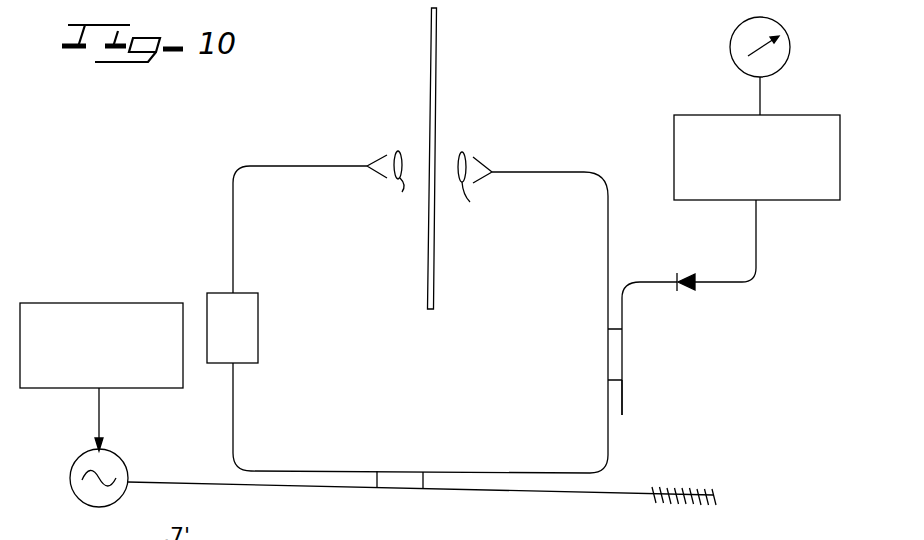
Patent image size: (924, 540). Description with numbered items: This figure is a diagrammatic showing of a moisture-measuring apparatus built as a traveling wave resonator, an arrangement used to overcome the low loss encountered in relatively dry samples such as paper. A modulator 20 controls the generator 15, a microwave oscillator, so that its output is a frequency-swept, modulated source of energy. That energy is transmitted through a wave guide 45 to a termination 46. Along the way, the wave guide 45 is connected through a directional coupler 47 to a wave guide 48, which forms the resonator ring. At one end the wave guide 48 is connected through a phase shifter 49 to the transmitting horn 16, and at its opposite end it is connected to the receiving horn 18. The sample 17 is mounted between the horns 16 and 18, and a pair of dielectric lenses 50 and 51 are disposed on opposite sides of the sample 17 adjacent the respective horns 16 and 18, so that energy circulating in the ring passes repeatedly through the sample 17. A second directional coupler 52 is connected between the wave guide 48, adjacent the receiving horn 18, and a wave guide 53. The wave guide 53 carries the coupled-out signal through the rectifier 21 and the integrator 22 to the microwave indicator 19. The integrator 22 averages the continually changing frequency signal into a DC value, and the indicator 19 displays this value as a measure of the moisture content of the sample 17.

The source 15 is at (121, 458).
The transmitting microwave horn 16 is at (383, 158).
The sample 17 is at (437, 100).
The receiving horn 18 is at (472, 157).
The indicating device 19 is at (730, 48).
The modulator 20 is at (112, 303).
The rectifier 21 is at (688, 292).
The integrator 22 is at (684, 114).
The wave guide 45 is at (268, 485).
The termination 46 is at (670, 500).
The directional coupler 47 is at (403, 480).
The wave guide 48 is at (283, 470).
The phase shifter 49 is at (258, 347).
The dielectric lens 50 is at (392, 187).
The dielectric lens 51 is at (470, 202).
The directional coupler 52 is at (622, 355).
The wave guide 53 is at (622, 410).